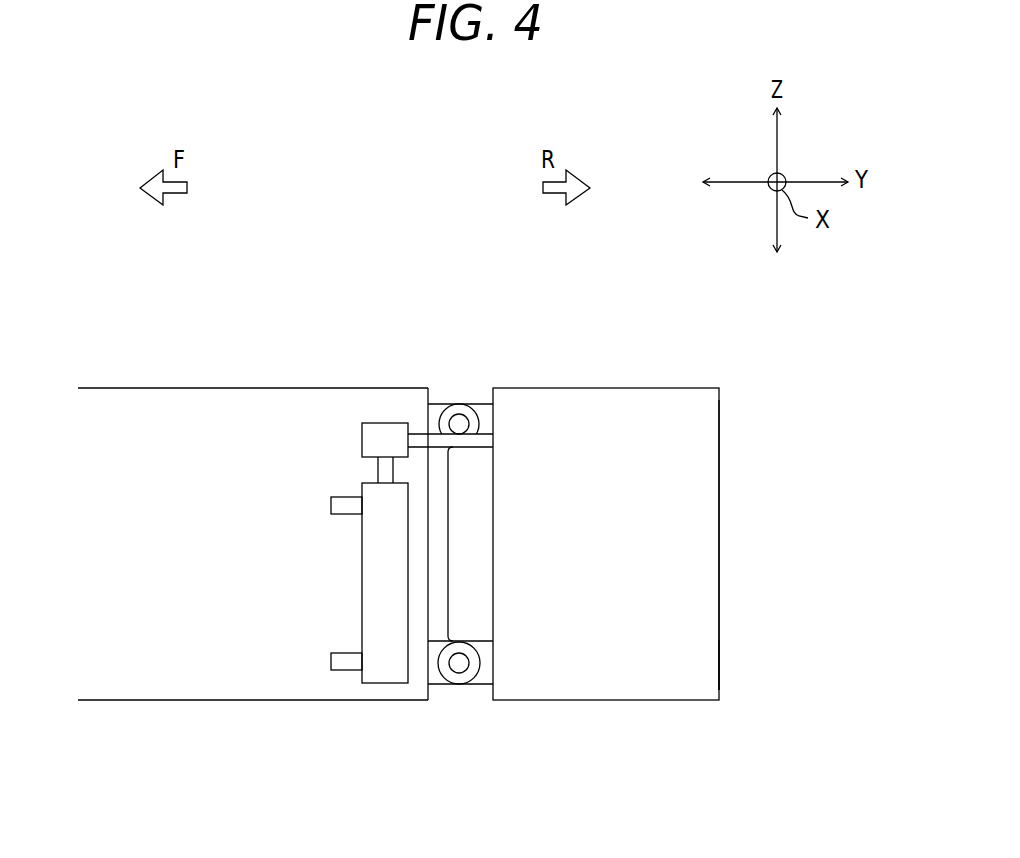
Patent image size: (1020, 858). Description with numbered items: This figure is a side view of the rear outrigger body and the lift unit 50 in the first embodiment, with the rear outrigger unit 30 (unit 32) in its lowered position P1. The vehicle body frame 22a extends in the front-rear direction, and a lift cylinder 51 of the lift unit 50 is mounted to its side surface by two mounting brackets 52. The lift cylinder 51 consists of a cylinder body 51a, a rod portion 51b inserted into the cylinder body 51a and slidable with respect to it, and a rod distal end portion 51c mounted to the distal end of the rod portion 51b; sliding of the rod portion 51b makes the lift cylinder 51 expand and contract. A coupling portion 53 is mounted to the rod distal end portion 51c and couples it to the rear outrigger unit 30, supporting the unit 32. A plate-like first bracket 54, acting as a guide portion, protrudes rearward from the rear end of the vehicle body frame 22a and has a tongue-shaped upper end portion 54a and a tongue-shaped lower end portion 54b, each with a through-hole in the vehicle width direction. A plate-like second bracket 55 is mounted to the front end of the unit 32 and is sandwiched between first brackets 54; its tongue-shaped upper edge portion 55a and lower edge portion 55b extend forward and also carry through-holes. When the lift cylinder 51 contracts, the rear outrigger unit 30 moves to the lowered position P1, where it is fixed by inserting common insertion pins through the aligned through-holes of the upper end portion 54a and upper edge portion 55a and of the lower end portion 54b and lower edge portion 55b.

The vehicle body frame 22a is at (218, 405).
The rear outrigger unit 30 is at (725, 470).
The unit 32 is at (720, 570).
The lowered position P1 is at (732, 665).
The lift unit 50 is at (383, 712).
The lift cylinder 51 is at (325, 552).
The cylinder body 51a is at (375, 577).
The rod portion 51b is at (383, 470).
The rod distal end portion 51c is at (375, 440).
The mounting bracket 52 is at (346, 501).
The coupling portion 53 is at (440, 442).
The first bracket 54 is at (468, 531).
The upper end portion 54a is at (447, 410).
The lower end portion 54b is at (452, 678).
The second bracket 55 is at (527, 541).
The upper edge portion 55a is at (485, 410).
The lower edge portion 55b is at (483, 677).